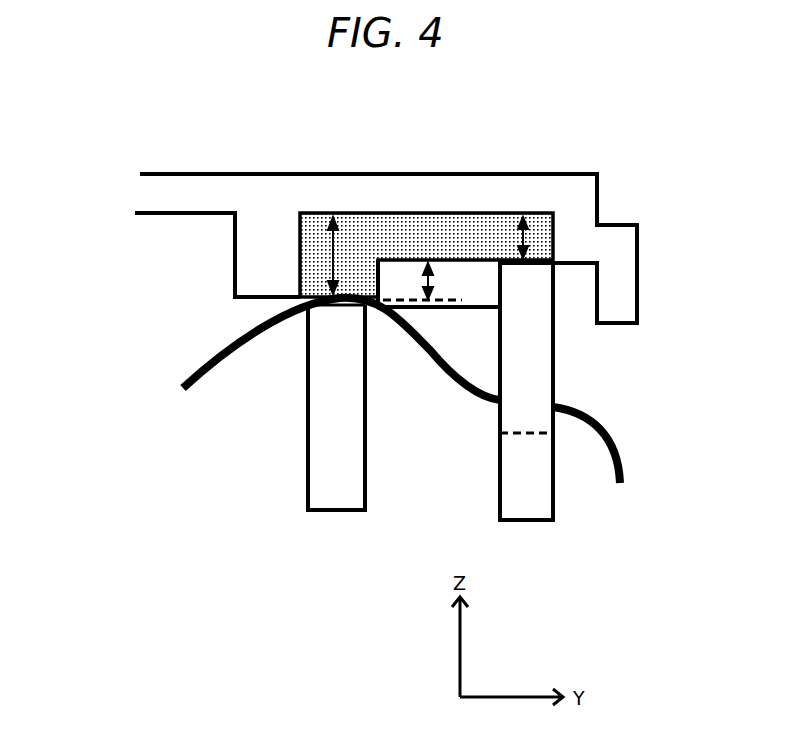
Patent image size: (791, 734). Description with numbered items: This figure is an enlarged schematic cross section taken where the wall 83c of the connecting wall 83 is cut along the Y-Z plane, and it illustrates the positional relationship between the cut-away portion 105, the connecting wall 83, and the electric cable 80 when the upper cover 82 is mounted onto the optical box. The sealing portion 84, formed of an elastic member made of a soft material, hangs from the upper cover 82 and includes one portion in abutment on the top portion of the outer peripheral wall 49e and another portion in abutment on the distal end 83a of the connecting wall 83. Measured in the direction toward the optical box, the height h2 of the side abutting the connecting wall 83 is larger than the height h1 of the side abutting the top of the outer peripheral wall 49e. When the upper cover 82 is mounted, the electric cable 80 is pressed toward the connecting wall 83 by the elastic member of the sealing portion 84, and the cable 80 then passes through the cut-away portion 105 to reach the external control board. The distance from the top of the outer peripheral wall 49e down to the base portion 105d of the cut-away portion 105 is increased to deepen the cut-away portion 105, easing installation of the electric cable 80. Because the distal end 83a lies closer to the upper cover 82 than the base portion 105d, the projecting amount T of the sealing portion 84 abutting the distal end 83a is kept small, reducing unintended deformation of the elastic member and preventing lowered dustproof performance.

The upper cover 82 is at (285, 190).
The sealing portion 84 is at (433, 232).
The electric cable 80 is at (212, 348).
The connecting wall 83 is at (277, 443).
The distal end of the connecting wall 83a is at (336, 303).
The wall of the connecting wall 83c is at (336, 407).
The cut-away portion 105 is at (527, 334).
The base portion of the cut-away portion 105d is at (528, 435).
The outer peripheral wall 49e is at (552, 262).
The height h1 is at (437, 277).
The height h2 is at (333, 295).
The projecting amount T is at (470, 260).